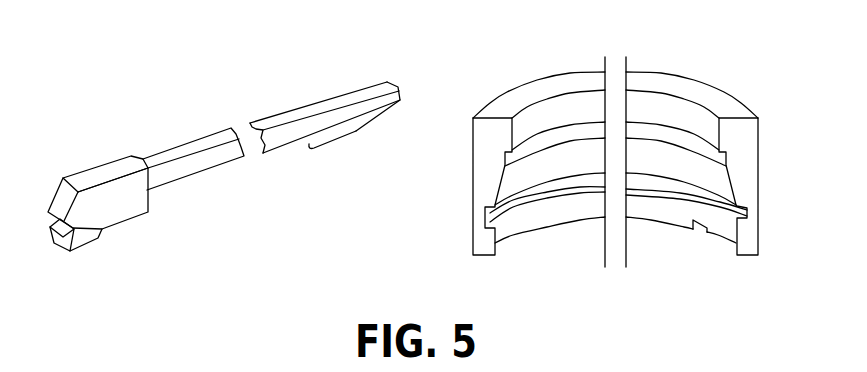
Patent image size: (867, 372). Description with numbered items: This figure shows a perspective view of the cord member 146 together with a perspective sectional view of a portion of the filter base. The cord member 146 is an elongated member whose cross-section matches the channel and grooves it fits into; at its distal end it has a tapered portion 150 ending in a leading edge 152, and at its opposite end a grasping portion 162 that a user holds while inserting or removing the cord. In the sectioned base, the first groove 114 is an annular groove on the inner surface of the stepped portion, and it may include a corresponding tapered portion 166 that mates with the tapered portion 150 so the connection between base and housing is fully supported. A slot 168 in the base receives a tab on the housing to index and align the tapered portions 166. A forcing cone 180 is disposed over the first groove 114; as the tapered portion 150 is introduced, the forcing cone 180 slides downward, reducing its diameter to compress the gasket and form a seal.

The first groove 114 is at (498, 215).
The cord member 146 is at (207, 185).
The tapered portion 150 is at (335, 90).
The leading edge 152 is at (399, 86).
The grasping portion 162 is at (77, 252).
The corresponding tapered portion 166 is at (680, 190).
The slot 168 is at (700, 234).
The forcing cone 180 is at (528, 173).